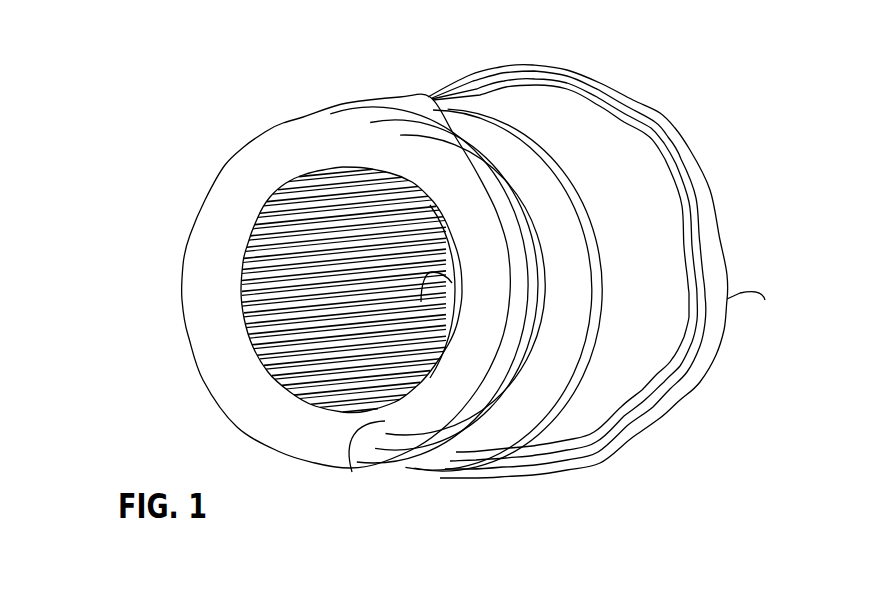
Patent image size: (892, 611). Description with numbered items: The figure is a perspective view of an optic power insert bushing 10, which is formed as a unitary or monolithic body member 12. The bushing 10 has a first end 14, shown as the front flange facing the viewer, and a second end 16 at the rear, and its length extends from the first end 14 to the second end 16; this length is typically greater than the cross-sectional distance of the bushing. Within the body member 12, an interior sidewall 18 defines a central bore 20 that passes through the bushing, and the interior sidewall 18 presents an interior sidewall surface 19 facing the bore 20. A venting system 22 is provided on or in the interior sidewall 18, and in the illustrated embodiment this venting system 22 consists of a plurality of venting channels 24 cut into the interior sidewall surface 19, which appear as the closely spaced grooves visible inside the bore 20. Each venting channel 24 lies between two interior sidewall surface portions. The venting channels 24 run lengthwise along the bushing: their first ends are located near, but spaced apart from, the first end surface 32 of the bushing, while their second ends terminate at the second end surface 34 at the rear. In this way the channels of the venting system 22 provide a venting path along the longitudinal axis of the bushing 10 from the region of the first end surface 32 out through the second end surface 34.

The optic power insert bushing 10 is at (183, 150).
The body member 12 is at (405, 98).
The first end 14 is at (297, 118).
The second end 16 is at (643, 99).
The interior sidewall 18 is at (238, 280).
The interior sidewall surface 19 is at (250, 338).
The bore 20 is at (440, 335).
The venting system 22 is at (272, 326).
The venting channels 24 is at (311, 353).
The first end surface 32 is at (352, 472).
The second end surface 34 is at (765, 300).